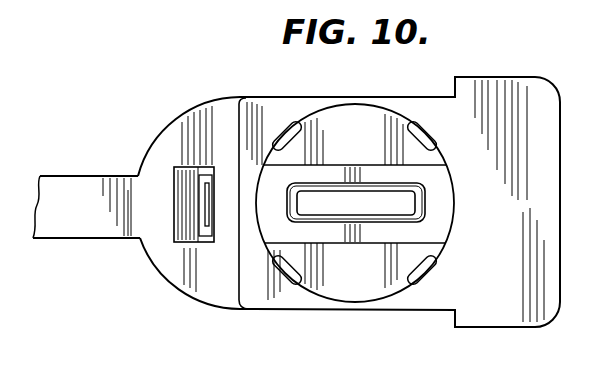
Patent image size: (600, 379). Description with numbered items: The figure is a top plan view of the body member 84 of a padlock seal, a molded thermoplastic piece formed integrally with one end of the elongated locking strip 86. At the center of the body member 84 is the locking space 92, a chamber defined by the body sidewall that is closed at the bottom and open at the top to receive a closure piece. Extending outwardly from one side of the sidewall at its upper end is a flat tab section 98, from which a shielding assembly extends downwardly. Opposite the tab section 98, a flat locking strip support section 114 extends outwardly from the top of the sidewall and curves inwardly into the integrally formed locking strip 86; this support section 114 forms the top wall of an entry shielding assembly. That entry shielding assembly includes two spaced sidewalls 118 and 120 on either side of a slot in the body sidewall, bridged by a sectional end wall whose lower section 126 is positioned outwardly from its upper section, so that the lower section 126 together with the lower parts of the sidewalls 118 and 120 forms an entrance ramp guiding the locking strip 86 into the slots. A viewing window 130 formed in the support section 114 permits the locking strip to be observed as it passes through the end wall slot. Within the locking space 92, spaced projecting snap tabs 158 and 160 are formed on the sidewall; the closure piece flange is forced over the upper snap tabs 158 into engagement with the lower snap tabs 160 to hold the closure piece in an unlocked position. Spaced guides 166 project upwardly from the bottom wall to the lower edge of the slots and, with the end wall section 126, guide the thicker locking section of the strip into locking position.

The body member 84 is at (433, 327).
The locking strip 86 is at (95, 210).
The locking space 92 is at (365, 215).
The tab section 98 is at (516, 211).
The locking strip support section 114 is at (183, 121).
The sidewall 118 is at (207, 243).
The sidewall 120 is at (217, 172).
The lower section 126 is at (201, 193).
The viewing window 130 is at (178, 232).
The upper snap tabs 158 is at (424, 132).
The lower snap tabs 160 is at (407, 122).
The guides 166 is at (377, 172).